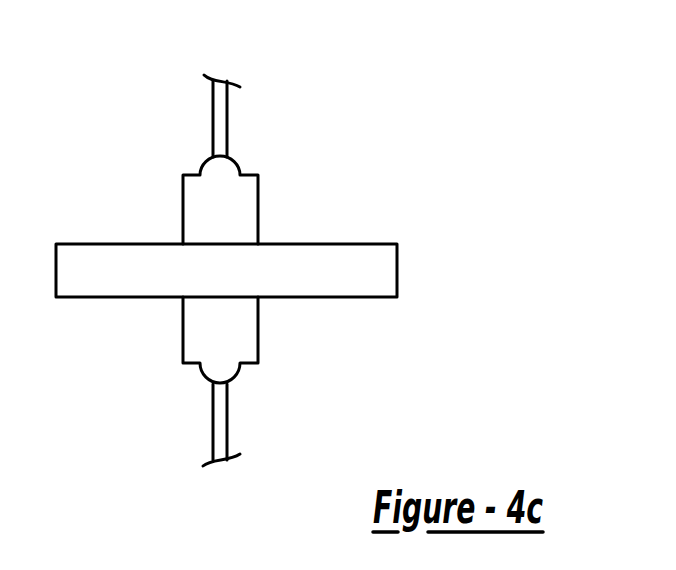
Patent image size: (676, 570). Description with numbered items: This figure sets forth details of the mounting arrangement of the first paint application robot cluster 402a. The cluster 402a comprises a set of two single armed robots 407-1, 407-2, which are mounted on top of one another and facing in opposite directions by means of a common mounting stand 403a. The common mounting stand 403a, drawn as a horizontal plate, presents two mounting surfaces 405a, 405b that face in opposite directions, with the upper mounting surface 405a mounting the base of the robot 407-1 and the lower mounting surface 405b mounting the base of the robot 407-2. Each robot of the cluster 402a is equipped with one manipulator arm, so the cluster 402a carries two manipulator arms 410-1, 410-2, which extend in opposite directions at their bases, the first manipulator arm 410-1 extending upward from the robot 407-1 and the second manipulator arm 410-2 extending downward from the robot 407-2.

The paint application robot cluster 402a is at (298, 205).
The common mounting stand 403a is at (405, 275).
The mounting surface 405a is at (90, 246).
The mounting surface 405b is at (248, 296).
The single armed robot 407-1 is at (180, 198).
The single armed robot 407-2 is at (180, 344).
The manipulator arm 410-1 is at (227, 110).
The manipulator arm 410-2 is at (228, 430).